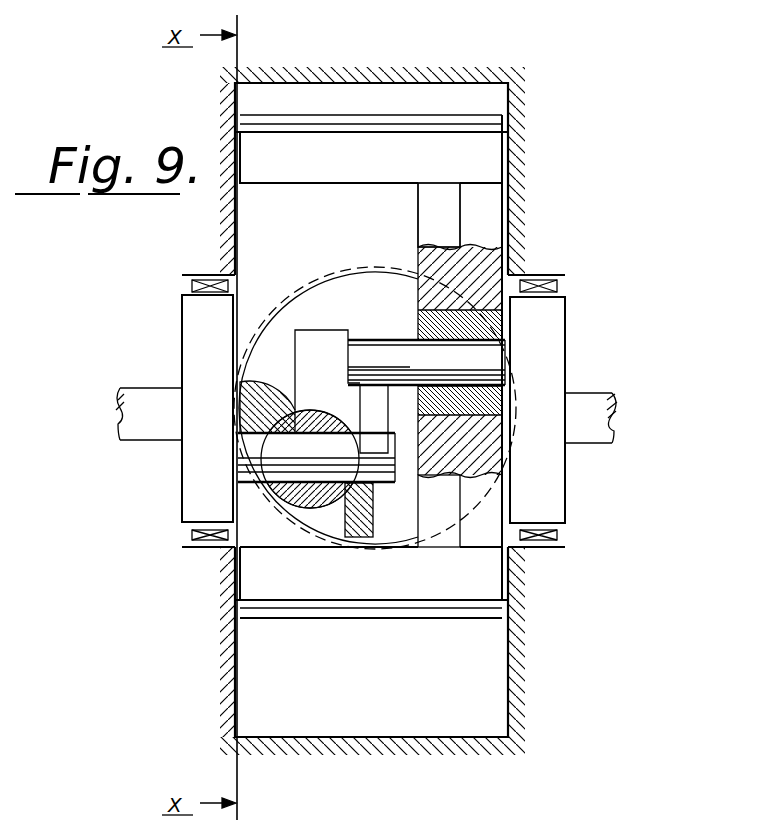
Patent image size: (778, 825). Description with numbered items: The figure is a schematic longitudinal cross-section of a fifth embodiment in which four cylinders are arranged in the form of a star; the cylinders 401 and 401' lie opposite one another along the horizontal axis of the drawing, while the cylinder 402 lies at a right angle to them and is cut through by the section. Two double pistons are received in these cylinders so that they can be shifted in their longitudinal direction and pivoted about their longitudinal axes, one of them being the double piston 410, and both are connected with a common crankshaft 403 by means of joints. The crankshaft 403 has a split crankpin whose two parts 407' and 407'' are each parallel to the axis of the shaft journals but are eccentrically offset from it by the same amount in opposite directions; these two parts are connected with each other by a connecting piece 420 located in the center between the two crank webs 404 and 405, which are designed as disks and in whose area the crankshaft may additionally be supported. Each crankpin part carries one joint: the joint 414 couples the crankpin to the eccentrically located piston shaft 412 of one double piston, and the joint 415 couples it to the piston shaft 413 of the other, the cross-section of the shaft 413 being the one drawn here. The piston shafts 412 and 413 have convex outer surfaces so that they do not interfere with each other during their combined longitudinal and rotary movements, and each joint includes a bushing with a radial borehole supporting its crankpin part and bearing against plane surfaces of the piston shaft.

The cylinder 401 is at (371, 320).
The cylinder 401' is at (331, 390).
The cylinder 402 is at (430, 732).
The crankshaft 403 is at (580, 353).
The crank web 404 is at (190, 315).
The crank web 405 is at (547, 480).
The crankpin part 407' is at (328, 401).
The crankpin part 407'' is at (249, 468).
The double piston 410 is at (389, 292).
The piston shaft 412 is at (487, 212).
The piston shaft 413 is at (257, 393).
The joint 414 is at (403, 318).
The joint 415 is at (291, 519).
The connecting piece 420 is at (368, 408).